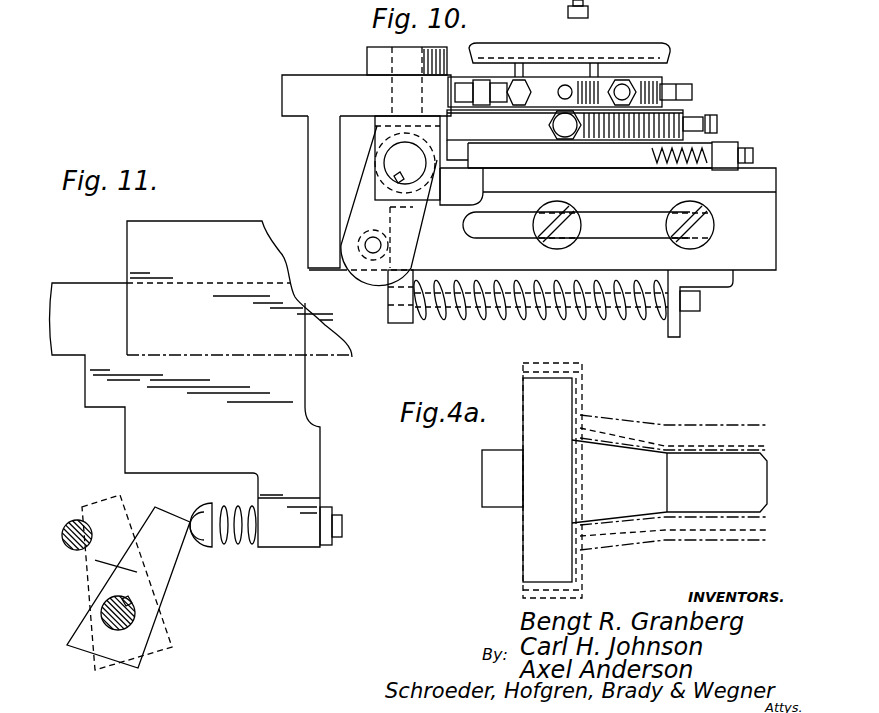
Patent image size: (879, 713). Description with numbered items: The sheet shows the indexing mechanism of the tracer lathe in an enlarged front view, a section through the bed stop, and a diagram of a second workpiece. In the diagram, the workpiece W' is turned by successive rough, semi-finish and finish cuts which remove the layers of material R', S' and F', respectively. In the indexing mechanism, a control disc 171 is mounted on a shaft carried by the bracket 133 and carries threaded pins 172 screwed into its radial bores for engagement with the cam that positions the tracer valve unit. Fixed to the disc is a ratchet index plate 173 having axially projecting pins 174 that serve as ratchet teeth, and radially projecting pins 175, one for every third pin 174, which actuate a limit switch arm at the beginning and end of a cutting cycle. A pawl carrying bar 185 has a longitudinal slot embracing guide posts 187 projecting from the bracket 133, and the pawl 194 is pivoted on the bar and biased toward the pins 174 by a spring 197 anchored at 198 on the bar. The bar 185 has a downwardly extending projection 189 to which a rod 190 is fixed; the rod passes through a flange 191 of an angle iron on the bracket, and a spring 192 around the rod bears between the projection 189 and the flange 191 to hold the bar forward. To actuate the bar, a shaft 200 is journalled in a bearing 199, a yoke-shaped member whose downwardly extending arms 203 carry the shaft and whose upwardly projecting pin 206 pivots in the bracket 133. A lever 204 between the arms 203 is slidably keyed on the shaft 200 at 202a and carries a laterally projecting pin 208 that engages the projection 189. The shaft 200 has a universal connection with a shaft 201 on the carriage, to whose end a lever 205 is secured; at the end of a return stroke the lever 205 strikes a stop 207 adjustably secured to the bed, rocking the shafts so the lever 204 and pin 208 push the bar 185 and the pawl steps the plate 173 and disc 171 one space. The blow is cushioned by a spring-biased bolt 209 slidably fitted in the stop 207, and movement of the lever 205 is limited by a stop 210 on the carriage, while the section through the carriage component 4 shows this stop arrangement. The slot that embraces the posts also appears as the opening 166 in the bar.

In FIG. 10, the bracket 133 is at (290, 89).
In FIG. 10, the slot 166 is at (602, 217).
In FIG. 10, the control disc 171 is at (586, 79).
In FIG. 10, the threaded pins 172 is at (494, 97).
In FIG. 10, the ratchet index plate 173 is at (530, 134).
In FIG. 10, the axially projecting pins 174 is at (464, 151).
In FIG. 10, the radially projecting pins 175 is at (588, 12).
In FIG. 10, the pawl carrying bar 185 is at (768, 234).
In FIG. 10, the guide posts 187 is at (680, 243).
In FIG. 10, the downwardly-extending projection 189 is at (402, 325).
In FIG. 10, the rod 190 is at (701, 300).
In FIG. 10, the downwardly extending flange 191 is at (680, 328).
In FIG. 10, the spring 192 is at (627, 318).
In FIG. 10, the pawl 194 is at (577, 163).
In FIG. 10, the spring 197 is at (705, 144).
In FIG. 10, the anchor 198 is at (731, 150).
In FIG. 10, the bearing 199 is at (358, 138).
In FIG. 10, the shaft 200 is at (405, 163).
In FIG. 10, the key 202a is at (441, 178).
In FIG. 10, the yoke arms 203 is at (375, 143).
In FIG. 10, the lever 204 is at (365, 203).
In FIG. 10, the upwardly projecting pin 206 is at (392, 90).
In FIG. 10, the laterally projecting pin 208 is at (383, 238).
In FIG. 11, the carriage 4 is at (98, 326).
In FIG. 11, the shaft 201 is at (133, 617).
In FIG. 11, the lever 205 is at (172, 562).
In FIG. 11, the stop 207 is at (290, 541).
In FIG. 11, the spring-biased bolt 209 is at (250, 505).
In FIG. 11, the stop 210 is at (75, 520).
In FIG. 4A, the workpiece W' is at (523, 480).
In FIG. 4A, the finish cut layer F' is at (669, 481).
In FIG. 4A, the semi-finish cut layer S' is at (674, 465).
In FIG. 4A, the rough cut layer R' is at (674, 471).